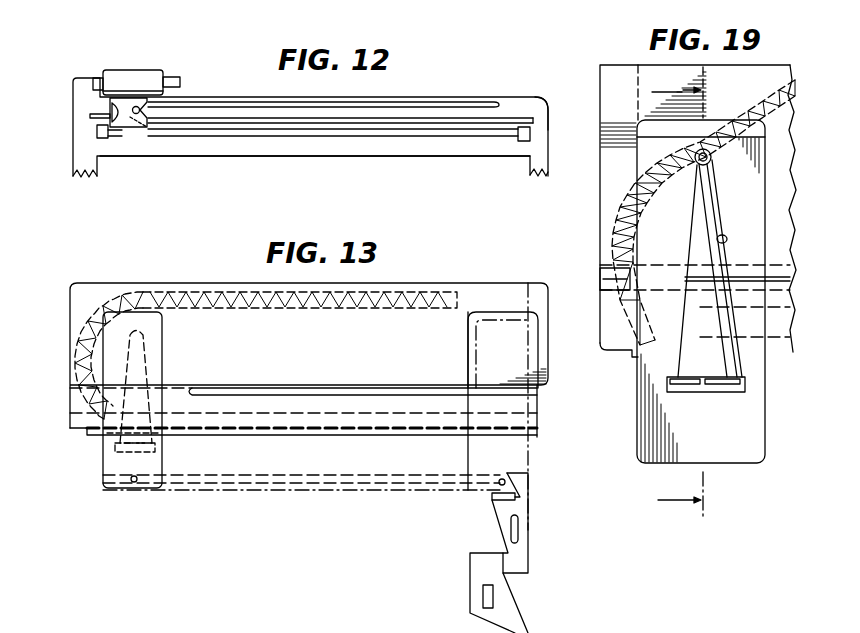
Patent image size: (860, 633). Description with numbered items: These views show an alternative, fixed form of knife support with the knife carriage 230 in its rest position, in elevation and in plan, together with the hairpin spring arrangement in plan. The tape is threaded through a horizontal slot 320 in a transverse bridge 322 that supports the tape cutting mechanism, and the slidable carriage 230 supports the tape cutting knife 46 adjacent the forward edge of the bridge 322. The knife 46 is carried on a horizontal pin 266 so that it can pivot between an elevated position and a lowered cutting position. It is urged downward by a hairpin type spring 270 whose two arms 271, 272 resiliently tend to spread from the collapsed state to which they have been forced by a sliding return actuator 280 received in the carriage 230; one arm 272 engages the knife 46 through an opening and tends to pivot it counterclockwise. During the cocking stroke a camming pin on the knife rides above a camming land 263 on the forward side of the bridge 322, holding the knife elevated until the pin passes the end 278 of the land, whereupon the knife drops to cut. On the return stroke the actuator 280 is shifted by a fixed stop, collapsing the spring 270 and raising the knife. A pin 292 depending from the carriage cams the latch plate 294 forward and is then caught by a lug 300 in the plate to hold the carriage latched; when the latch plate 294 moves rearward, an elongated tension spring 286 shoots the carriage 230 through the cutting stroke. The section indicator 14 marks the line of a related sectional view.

In FIG. 19, the section line 14 is at (666, 292).
In FIG. 12, the tape cutting knife 46 is at (138, 128).
In FIG. 19, the tape cutting knife 46 is at (690, 392).
In FIG. 12, the knife carriage 230 is at (125, 70).
In FIG. 13, the knife carriage 230 is at (164, 365).
In FIG. 19, the knife carriage 230 is at (803, 433).
In FIG. 12, the camming land 263 is at (410, 107).
In FIG. 12, the horizontal pin 266 is at (138, 110).
In FIG. 19, the hairpin type spring 270 is at (710, 240).
In FIG. 19, the spring arm 271 is at (718, 247).
In FIG. 19, the spring arm 272 is at (710, 268).
In FIG. 12, the end of camming land 278 is at (524, 92).
In FIG. 13, the sliding return actuator 280 is at (180, 392).
In FIG. 19, the sliding return actuator 280 is at (714, 301).
In FIG. 13, the elongated tension spring 286 is at (283, 309).
In FIG. 19, the elongated tension spring 286 is at (625, 208).
In FIG. 13, the pin 292 is at (131, 481).
In FIG. 13, the latch plate 294 is at (523, 529).
In FIG. 13, the lug 300 is at (492, 494).
In FIG. 12, the horizontal slot 320 is at (428, 134).
In FIG. 12, the transverse bridge 322 is at (365, 148).